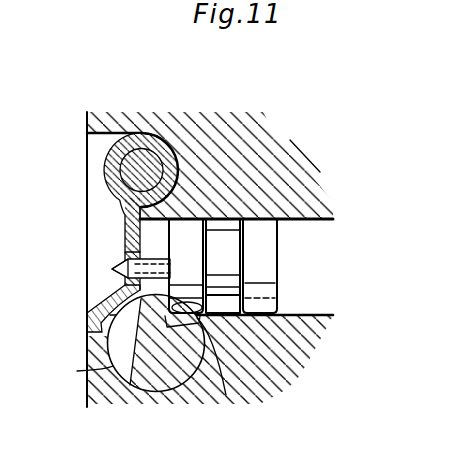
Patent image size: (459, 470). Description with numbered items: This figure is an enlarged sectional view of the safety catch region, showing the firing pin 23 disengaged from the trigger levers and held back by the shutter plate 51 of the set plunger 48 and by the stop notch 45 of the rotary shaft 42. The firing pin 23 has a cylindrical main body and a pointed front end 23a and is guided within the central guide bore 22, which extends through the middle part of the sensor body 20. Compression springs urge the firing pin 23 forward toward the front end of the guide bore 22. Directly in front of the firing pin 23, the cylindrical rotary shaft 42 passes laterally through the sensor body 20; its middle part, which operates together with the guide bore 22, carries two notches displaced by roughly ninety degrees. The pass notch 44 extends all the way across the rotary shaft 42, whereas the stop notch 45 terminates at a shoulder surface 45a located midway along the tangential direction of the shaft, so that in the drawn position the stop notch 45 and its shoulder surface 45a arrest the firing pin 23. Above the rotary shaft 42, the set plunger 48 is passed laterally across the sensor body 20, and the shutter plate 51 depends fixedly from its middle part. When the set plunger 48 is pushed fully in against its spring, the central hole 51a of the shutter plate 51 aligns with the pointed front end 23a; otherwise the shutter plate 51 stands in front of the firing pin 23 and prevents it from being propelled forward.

The sensor body 20 is at (265, 137).
The central guide bore 22 is at (324, 315).
The firing pin 23 is at (281, 262).
The pointed front end 23a is at (118, 263).
The rotary shaft 42 is at (163, 391).
The pass notch 44 is at (96, 336).
The stop notch 45 is at (205, 318).
The shoulder surface 45a is at (223, 325).
The set plunger 48 is at (142, 158).
The shutter plate 51 is at (125, 223).
The central hole 51a is at (118, 273).